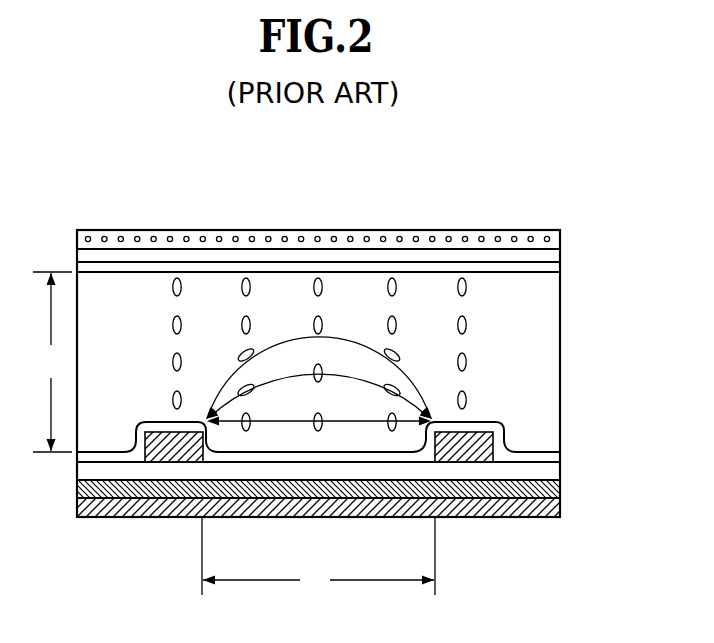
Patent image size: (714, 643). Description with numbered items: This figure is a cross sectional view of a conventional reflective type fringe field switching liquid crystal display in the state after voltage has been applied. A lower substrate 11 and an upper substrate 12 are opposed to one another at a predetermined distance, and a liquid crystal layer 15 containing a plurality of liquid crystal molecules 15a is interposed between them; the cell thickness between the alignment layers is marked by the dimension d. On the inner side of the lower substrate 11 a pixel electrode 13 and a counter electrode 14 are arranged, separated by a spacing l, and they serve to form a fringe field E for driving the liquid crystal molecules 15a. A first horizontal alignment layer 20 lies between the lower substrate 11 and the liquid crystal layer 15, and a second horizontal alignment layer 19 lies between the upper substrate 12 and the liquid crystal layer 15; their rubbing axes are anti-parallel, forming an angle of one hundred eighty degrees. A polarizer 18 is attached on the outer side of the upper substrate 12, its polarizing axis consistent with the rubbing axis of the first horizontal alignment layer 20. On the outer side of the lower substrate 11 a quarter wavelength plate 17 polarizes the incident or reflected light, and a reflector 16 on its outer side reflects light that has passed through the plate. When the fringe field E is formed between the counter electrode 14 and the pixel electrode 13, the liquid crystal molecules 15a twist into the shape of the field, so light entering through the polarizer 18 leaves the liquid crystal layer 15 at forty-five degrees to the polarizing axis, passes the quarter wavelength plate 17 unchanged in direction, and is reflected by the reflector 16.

The lower substrate 11 is at (553, 468).
The upper substrate 12 is at (553, 256).
The pixel electrode 13 is at (172, 455).
The counter electrode 14 is at (467, 455).
The liquid crystal layer 15 is at (553, 382).
The liquid crystal molecules 15a is at (170, 362).
The reflector 16 is at (553, 508).
The quarter wavelength plate 17 is at (553, 483).
The polarizer 18 is at (552, 238).
The second horizontal alignment layer 19 is at (553, 268).
The first horizontal alignment layer 20 is at (553, 449).
The fringe field E is at (426, 380).
The cell gap d is at (52, 362).
The electrode spacing l is at (318, 557).